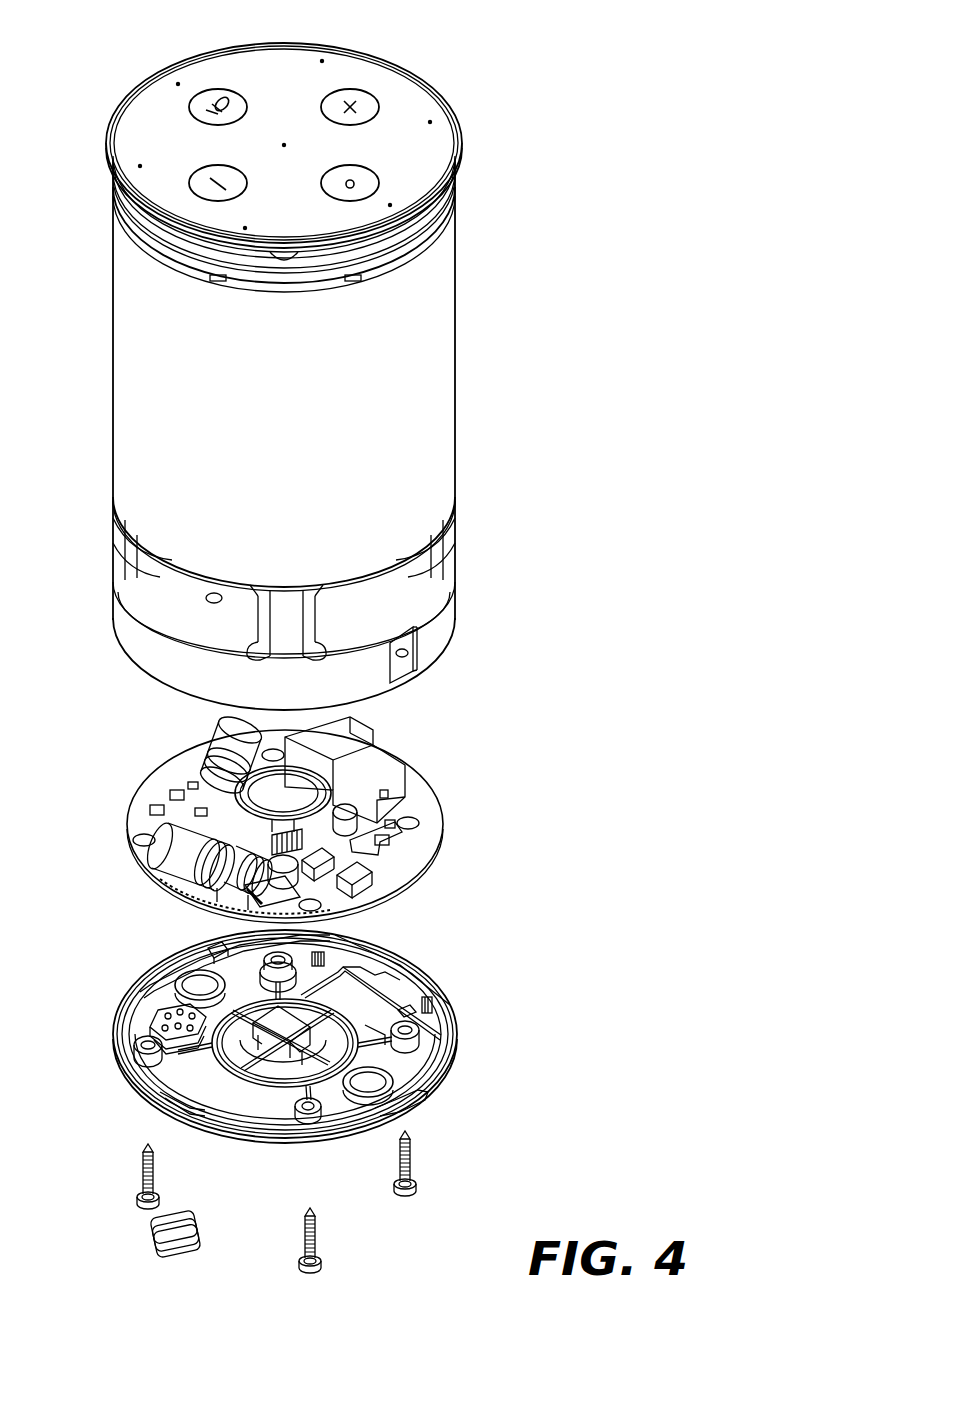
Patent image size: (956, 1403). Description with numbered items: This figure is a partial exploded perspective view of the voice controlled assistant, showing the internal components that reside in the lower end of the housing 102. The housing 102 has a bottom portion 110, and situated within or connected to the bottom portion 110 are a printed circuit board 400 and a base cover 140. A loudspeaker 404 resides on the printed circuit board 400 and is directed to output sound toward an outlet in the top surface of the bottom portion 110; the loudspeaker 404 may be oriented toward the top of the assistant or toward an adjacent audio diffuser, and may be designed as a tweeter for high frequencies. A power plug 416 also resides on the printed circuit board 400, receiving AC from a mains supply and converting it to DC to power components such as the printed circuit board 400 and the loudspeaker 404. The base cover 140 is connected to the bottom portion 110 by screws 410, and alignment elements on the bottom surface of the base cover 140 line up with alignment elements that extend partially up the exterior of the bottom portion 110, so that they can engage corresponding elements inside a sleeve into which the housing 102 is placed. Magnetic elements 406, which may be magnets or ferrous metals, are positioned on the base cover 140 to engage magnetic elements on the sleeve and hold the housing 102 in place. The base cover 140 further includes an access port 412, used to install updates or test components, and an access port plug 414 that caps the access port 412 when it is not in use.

The housing 102 is at (460, 65).
The bottom portion 110 is at (456, 590).
The base cover 140 is at (443, 1040).
The printed circuit board 400 is at (435, 810).
The loudspeaker 404 is at (240, 790).
The magnetic elements 406 is at (183, 977).
The screws 410 is at (146, 1148).
The access port 412 is at (157, 1018).
The access port plug 414 is at (153, 1228).
The power plug 416 is at (405, 773).